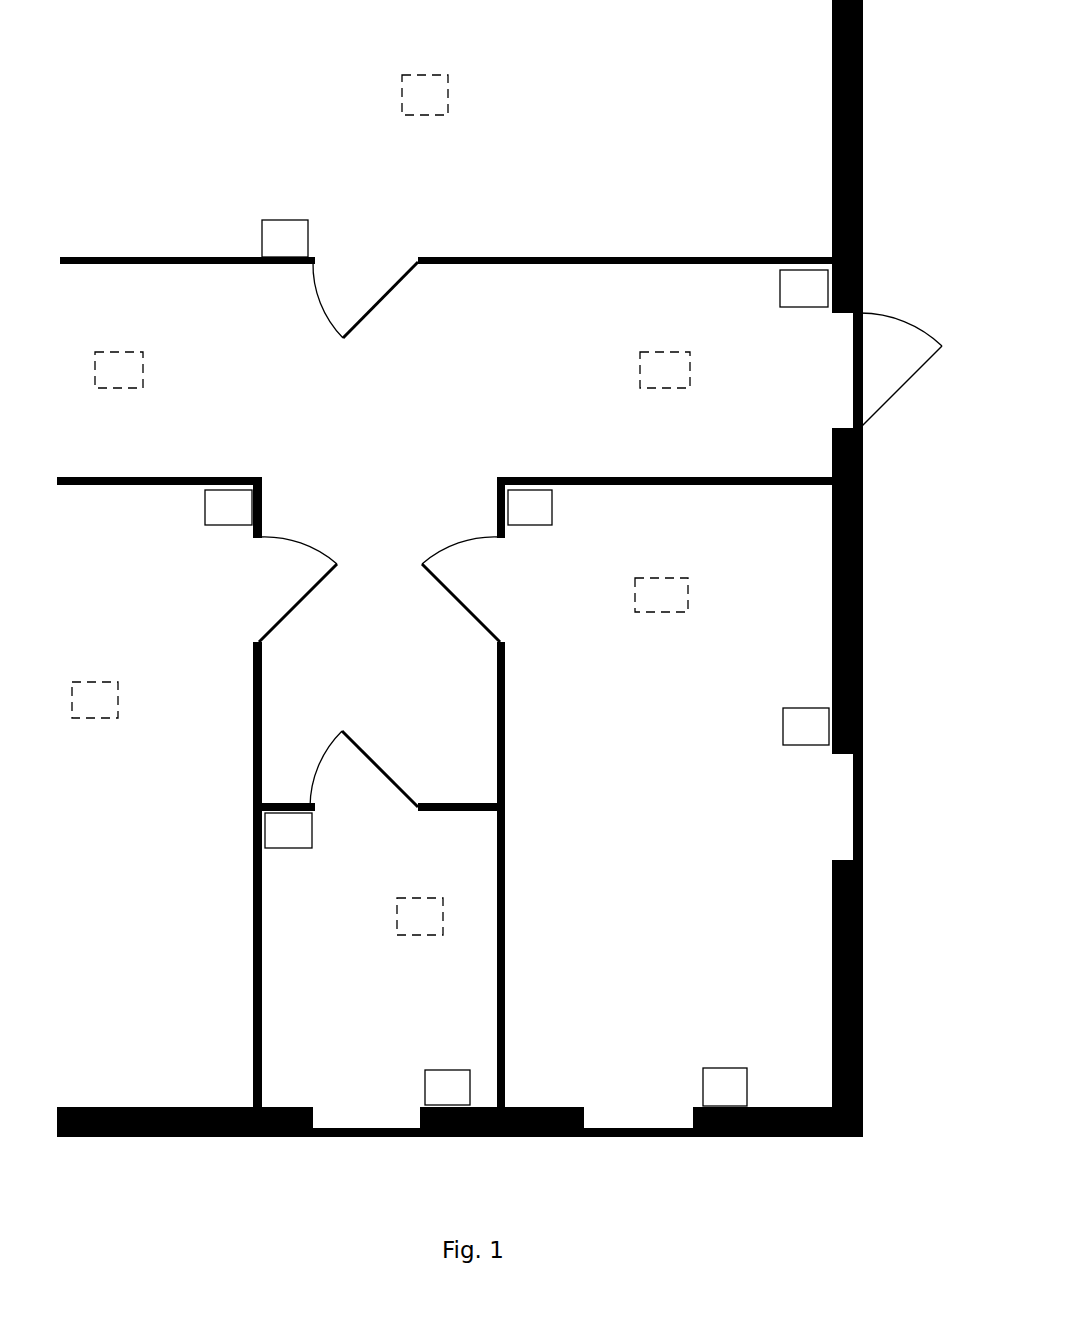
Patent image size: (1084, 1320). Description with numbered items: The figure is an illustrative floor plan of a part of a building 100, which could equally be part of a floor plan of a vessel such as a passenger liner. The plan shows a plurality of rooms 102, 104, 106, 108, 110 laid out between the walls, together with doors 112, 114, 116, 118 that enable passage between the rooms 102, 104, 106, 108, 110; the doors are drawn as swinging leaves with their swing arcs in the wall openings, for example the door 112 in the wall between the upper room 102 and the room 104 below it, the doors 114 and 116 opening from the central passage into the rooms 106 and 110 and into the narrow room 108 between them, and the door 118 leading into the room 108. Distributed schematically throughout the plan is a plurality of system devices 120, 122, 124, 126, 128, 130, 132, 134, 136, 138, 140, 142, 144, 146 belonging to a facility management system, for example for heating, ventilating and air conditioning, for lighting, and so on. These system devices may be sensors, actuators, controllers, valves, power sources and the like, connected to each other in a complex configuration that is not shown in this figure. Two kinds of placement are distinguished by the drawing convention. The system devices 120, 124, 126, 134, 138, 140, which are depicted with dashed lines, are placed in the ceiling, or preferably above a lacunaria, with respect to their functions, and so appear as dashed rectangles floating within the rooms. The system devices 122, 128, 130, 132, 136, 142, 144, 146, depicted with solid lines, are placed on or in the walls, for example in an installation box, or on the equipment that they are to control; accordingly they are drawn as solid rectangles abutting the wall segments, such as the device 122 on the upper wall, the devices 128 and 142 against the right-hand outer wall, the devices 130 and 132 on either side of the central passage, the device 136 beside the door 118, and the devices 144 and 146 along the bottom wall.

The building 100 is at (203, 33).
The room 102 is at (718, 225).
The room 104 is at (565, 300).
The room 106 is at (147, 600).
The room 108 is at (470, 851).
The room 110 is at (750, 520).
The door 112 is at (366, 312).
The door 114 is at (325, 577).
The door 116 is at (452, 592).
The door 118 is at (382, 769).
The system device 120 is at (440, 97).
The system device 122 is at (300, 237).
The system device 124 is at (135, 375).
The system device 126 is at (683, 376).
The system device 128 is at (792, 286).
The system device 130 is at (212, 502).
The system device 132 is at (540, 500).
The system device 134 is at (105, 700).
The system device 136 is at (300, 835).
The system device 138 is at (405, 915).
The system device 140 is at (643, 596).
The system device 142 is at (795, 727).
The system device 144 is at (432, 1088).
The system device 146 is at (712, 1088).